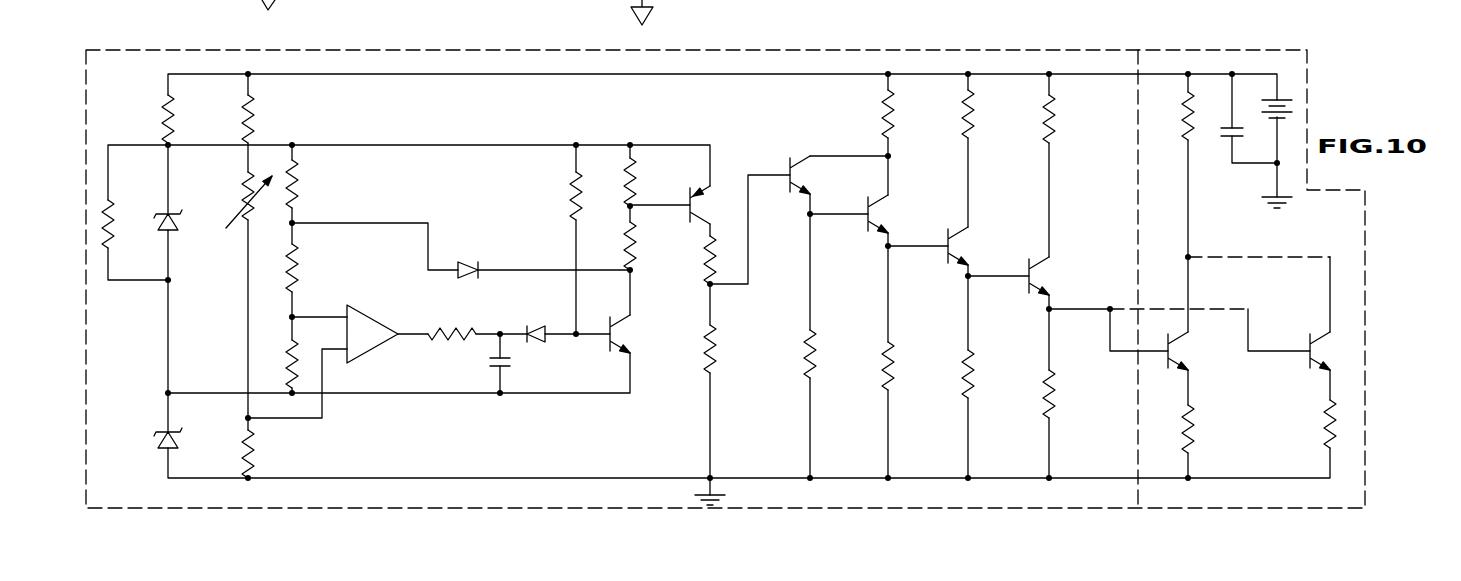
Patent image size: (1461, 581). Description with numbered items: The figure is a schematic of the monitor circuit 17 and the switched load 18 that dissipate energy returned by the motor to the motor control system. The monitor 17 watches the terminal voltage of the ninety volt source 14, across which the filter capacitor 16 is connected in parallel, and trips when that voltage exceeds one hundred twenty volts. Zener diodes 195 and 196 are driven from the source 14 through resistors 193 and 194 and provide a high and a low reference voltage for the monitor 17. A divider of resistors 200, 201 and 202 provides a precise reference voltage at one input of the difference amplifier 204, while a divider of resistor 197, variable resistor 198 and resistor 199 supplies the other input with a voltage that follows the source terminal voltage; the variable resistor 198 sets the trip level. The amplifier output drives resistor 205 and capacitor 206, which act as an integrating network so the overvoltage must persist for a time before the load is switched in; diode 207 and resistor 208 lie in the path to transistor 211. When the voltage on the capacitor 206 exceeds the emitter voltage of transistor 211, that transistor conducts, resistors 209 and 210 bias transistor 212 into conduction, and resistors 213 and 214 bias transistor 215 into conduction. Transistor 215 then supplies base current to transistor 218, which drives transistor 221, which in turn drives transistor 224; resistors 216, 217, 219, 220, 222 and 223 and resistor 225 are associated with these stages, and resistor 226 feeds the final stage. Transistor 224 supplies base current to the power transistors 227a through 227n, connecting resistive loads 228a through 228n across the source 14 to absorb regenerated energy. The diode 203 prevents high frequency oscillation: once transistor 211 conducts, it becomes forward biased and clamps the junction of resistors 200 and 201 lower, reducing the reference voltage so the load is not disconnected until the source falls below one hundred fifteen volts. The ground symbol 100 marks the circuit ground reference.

The 90 volt source 14 is at (1256, 108).
The filter capacitor 16 is at (1259, 132).
The monitor circuit 17 is at (156, 48).
The switched load 18 is at (1308, 50).
The ground connection 100 is at (630, 12).
The resistor 193 is at (166, 114).
The resistor 194 is at (110, 242).
The zener diode 195 is at (162, 200).
The zener diode 196 is at (156, 426).
The resistor 197 is at (242, 114).
The variable resistor 198 is at (238, 192).
The resistor 199 is at (260, 448).
The resistor 200 is at (318, 168).
The resistor 201 is at (312, 264).
The resistor 202 is at (290, 358).
The diode 203 is at (472, 259).
The difference amplifier 204 is at (385, 320).
The resistor 205 is at (466, 330).
The capacitor 206 is at (492, 368).
The diode 207 is at (552, 314).
The resistor 208 is at (554, 192).
The resistor 209 is at (640, 170).
The resistor 210 is at (640, 246).
The transistor 211 is at (624, 332).
The transistor 212 is at (694, 209).
The resistor 213 is at (700, 270).
The resistor 214 is at (700, 368).
The transistor 215 is at (798, 180).
The resistor 216 is at (800, 334).
The resistor 217 is at (872, 118).
The transistor 218 is at (878, 212).
The resistor 219 is at (880, 360).
The resistor 220 is at (950, 118).
The transistor 221 is at (966, 244).
The resistor 222 is at (950, 362).
The resistor 223 is at (1032, 118).
The transistor 224 is at (1043, 274).
The resistor 225 is at (1033, 382).
The resistor 226 is at (1178, 134).
The power transistor 227a is at (1179, 352).
The power transistor 227n is at (1308, 332).
The resistive load 228a is at (1214, 404).
The resistive load 228n is at (1316, 442).